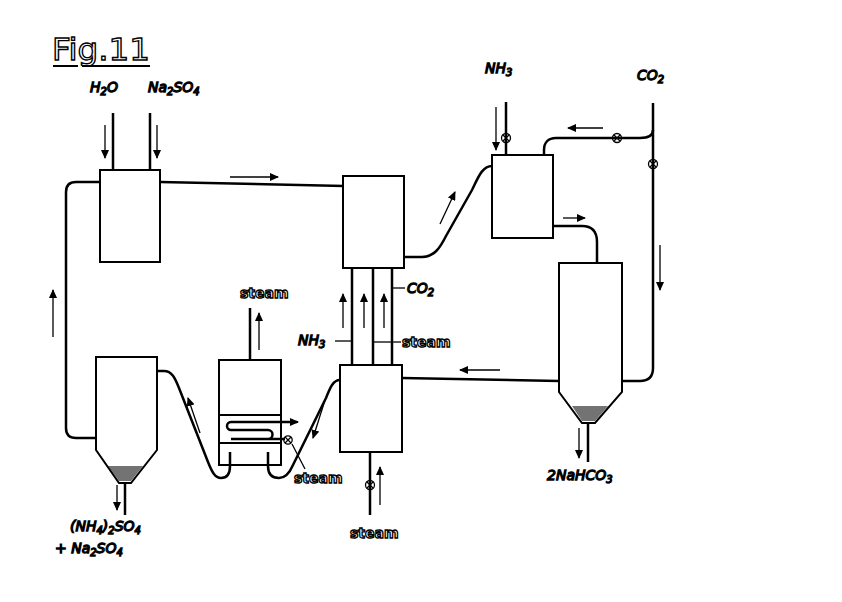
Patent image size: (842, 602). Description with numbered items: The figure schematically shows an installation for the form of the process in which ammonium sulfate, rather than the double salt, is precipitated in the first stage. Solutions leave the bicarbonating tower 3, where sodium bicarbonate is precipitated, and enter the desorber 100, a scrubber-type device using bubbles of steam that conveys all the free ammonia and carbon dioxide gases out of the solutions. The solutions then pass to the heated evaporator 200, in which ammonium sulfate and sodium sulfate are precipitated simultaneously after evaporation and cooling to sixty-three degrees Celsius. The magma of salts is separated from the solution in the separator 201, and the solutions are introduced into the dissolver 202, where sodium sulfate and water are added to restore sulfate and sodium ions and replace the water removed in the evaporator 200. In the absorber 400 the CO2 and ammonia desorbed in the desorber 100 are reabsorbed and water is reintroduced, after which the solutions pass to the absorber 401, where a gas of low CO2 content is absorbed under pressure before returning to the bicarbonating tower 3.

The dissolver 202 is at (130, 216).
The separator 201 is at (126, 436).
The evaporator 200 is at (258, 386).
The absorber 400 is at (373, 270).
The absorber 401 is at (522, 170).
The desorber 100 is at (371, 440).
The bicarbonating tower 3 is at (590, 362).